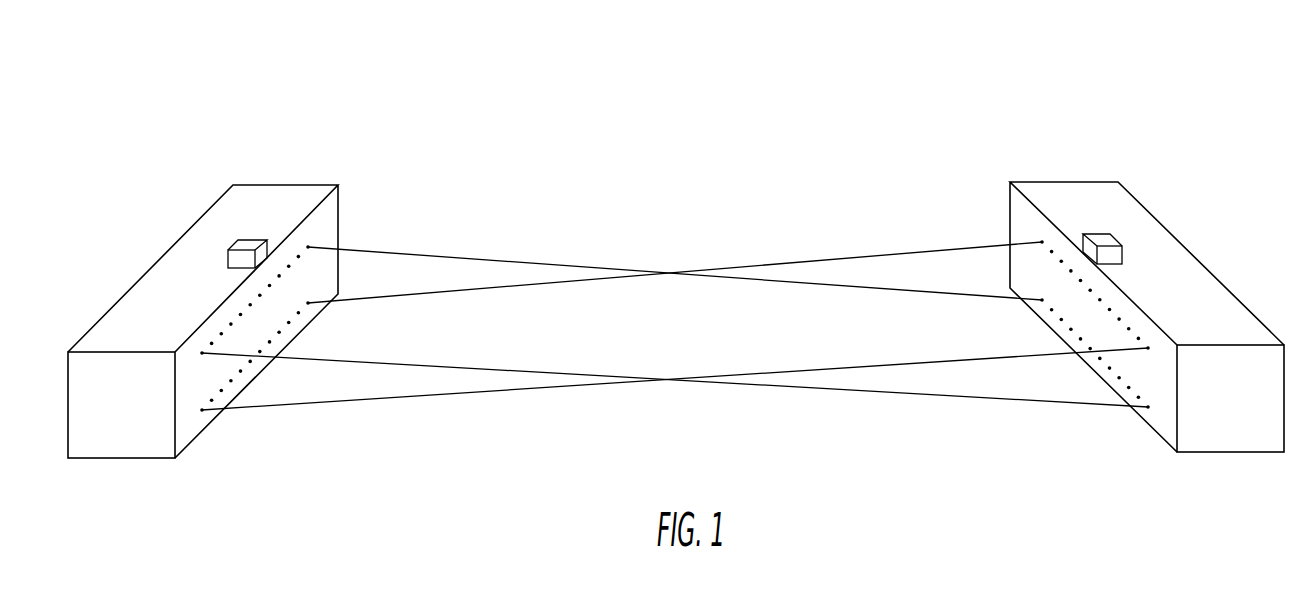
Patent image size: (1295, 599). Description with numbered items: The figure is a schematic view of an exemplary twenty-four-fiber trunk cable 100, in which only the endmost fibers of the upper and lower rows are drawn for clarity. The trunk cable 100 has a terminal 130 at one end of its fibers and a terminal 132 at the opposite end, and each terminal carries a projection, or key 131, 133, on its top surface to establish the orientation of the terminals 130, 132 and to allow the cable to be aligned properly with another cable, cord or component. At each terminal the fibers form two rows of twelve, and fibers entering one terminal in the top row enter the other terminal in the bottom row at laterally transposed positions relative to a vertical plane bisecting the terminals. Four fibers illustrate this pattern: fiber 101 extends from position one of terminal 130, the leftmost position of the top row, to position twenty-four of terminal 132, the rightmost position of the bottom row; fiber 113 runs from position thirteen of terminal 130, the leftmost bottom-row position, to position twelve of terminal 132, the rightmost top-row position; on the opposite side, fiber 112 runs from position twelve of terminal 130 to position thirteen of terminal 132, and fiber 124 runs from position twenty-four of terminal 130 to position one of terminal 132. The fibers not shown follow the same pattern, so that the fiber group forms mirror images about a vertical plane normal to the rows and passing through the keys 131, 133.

The trunk cable 100 is at (1090, 129).
The optical fiber 101 is at (325, 362).
The optical fiber 112 is at (367, 250).
The optical fiber 113 is at (445, 397).
The optical fiber 124 is at (468, 288).
The terminal 130 is at (258, 193).
The key 131 is at (252, 248).
The terminal 132 is at (1120, 202).
The key 133 is at (1103, 240).